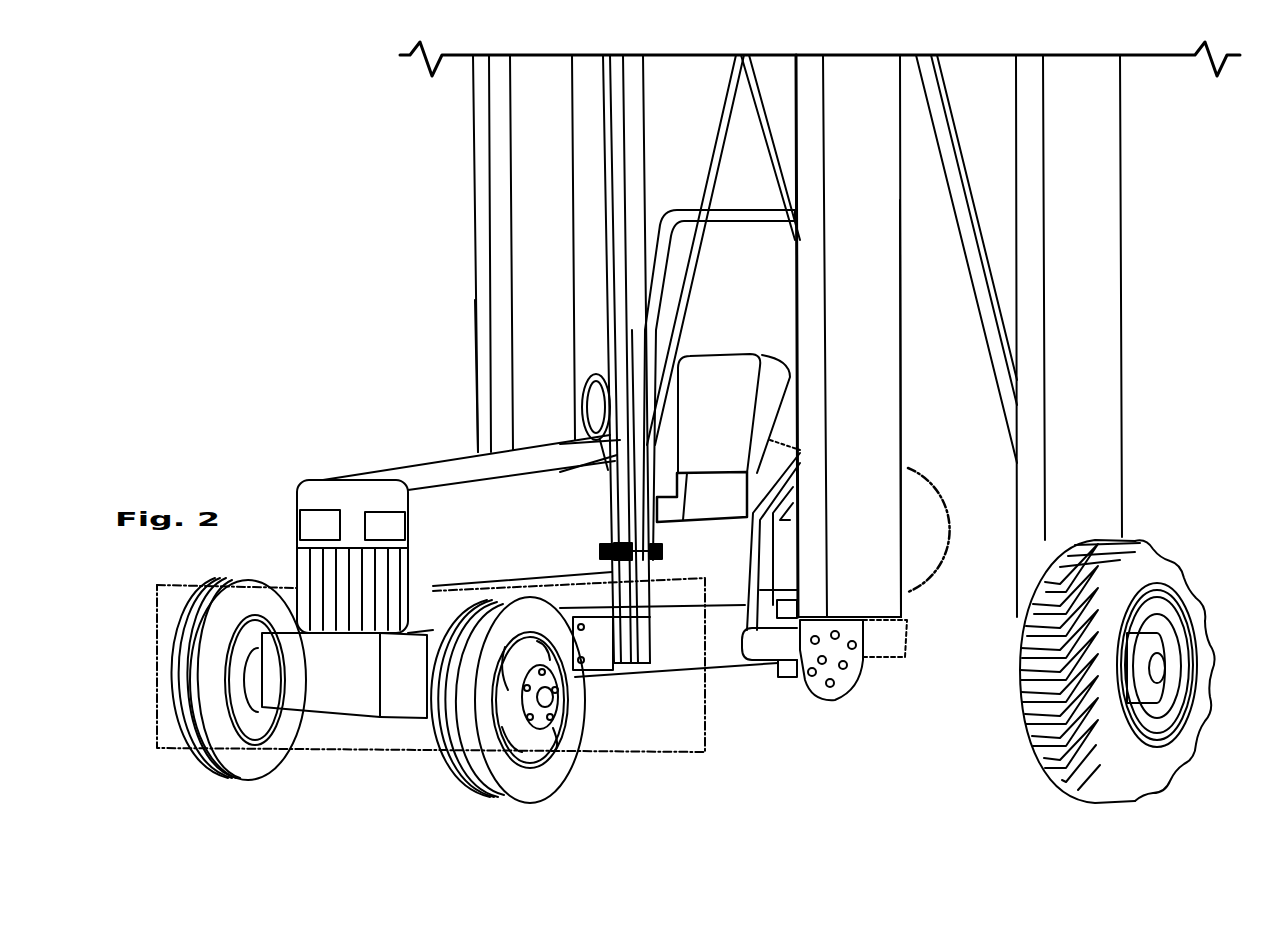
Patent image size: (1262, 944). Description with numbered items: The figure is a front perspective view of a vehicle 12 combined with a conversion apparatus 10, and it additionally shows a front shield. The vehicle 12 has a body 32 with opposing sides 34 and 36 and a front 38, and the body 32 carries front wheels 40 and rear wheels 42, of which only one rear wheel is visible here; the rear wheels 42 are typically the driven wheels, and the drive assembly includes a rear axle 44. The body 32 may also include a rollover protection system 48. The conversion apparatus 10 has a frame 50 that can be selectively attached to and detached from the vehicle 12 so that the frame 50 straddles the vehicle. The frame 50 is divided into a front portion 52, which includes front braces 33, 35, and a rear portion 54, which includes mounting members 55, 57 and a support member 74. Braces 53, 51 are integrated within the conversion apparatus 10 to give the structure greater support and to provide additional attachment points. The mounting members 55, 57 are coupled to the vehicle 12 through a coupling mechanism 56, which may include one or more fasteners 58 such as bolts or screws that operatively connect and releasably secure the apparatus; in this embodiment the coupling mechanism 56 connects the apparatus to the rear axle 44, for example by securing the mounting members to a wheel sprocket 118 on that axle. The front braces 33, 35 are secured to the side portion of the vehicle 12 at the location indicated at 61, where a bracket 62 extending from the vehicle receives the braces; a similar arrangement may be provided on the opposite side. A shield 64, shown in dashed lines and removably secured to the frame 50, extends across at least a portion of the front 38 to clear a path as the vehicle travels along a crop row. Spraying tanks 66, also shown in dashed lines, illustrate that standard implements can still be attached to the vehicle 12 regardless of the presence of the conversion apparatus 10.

The conversion apparatus 10 is at (1158, 226).
The vehicle 12 is at (429, 516).
The body 32 is at (447, 452).
The front brace 33 is at (473, 318).
The side 34 is at (523, 490).
The front brace 35 is at (611, 176).
The side 36 is at (296, 502).
The front 38 is at (348, 523).
The front wheels 40 is at (265, 767).
The rear wheels 42 is at (1158, 775).
The rear axle 44 is at (767, 645).
The rollover protection system 48 is at (738, 221).
The frame 50 is at (955, 120).
The brace 51 is at (697, 185).
The front portion 52 is at (460, 165).
The brace 53 is at (768, 152).
The rear portion 54 is at (893, 290).
The mounting member 55 is at (572, 268).
The coupling mechanism 56 is at (882, 640).
The mounting member 57 is at (848, 336).
The fasteners 58 is at (780, 605).
The front brace securing location 61 is at (600, 551).
The bracket 62 is at (617, 663).
The shield 64 is at (345, 760).
The spraying tanks 66 is at (908, 470).
The support member 74 is at (1057, 336).
The wheel sprocket 118 is at (860, 678).